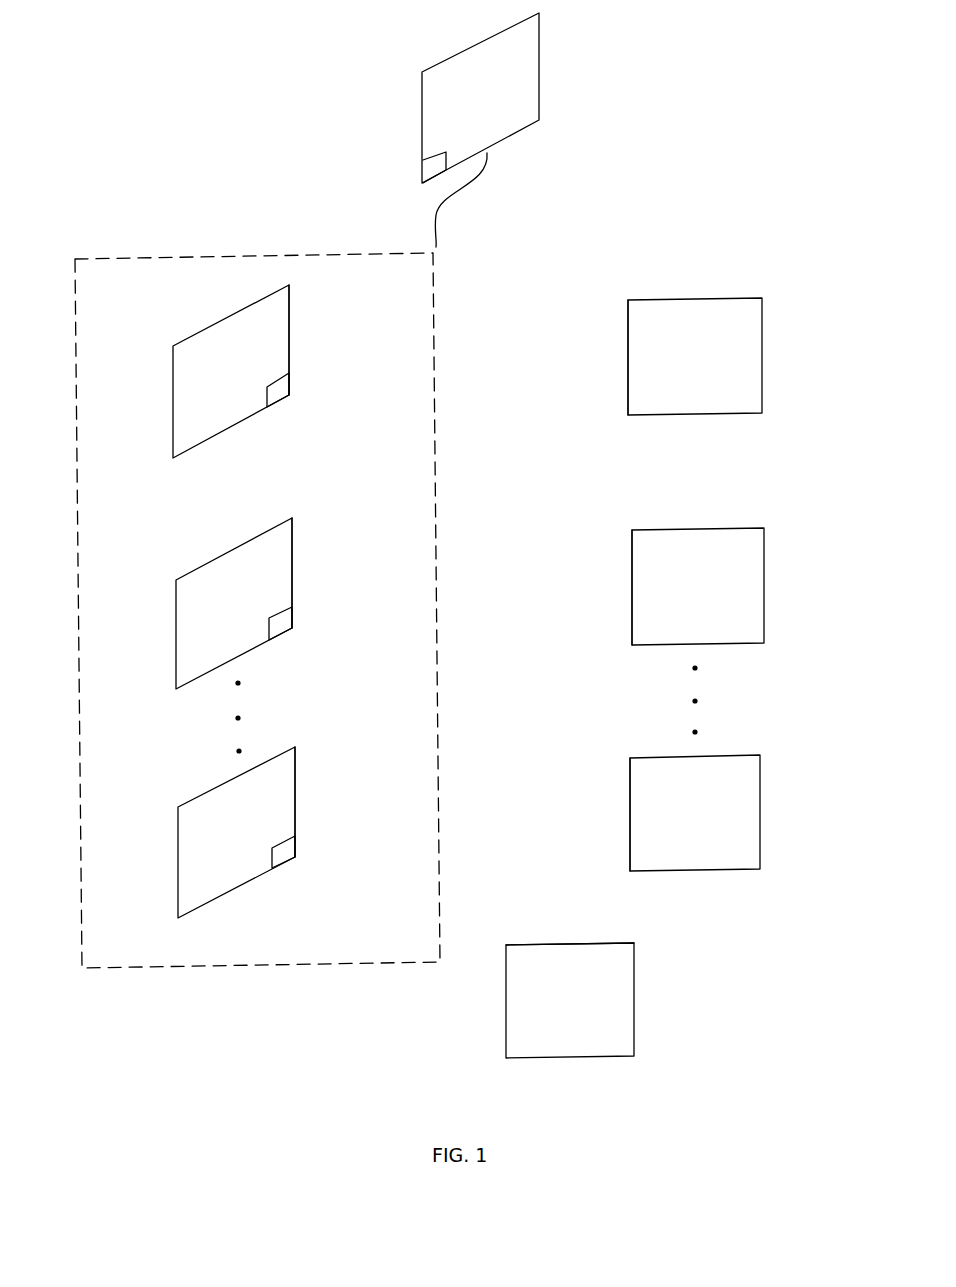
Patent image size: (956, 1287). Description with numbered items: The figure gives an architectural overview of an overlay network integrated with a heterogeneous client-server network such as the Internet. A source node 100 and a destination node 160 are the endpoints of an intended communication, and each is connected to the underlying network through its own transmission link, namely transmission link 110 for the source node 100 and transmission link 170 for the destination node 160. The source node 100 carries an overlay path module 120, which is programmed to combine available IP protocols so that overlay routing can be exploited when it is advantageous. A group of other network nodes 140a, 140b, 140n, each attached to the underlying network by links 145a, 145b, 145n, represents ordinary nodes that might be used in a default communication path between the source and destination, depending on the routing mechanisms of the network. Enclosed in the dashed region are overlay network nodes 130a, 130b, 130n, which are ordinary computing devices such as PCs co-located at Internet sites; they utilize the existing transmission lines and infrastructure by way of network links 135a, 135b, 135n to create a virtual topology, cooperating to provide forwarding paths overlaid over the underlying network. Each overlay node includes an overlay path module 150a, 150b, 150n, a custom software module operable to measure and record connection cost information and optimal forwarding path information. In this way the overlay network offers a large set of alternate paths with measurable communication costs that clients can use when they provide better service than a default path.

The source node 100 is at (480, 94).
The transmission link 110 is at (477, 200).
The overlay path module 120 is at (426, 172).
The overlay network node 130a is at (204, 371).
The overlay network node 130b is at (207, 603).
The overlay network node 130n is at (209, 832).
The network link 135a is at (289, 337).
The network link 135b is at (292, 570).
The network link 135n is at (295, 798).
The overlay path module 150a is at (276, 393).
The overlay path module 150b is at (279, 626).
The overlay path module 150n is at (282, 856).
The network node 140a is at (724, 356).
The network node 140b is at (728, 586).
The network node 140n is at (724, 813).
The link 145a is at (628, 356).
The link 145b is at (632, 586).
The link 145n is at (630, 813).
The destination node 160 is at (593, 1000).
The transmission link 170 is at (569, 944).